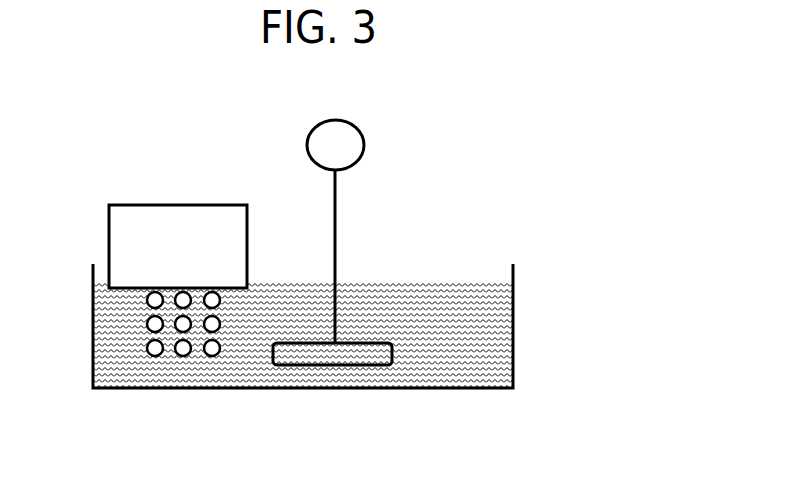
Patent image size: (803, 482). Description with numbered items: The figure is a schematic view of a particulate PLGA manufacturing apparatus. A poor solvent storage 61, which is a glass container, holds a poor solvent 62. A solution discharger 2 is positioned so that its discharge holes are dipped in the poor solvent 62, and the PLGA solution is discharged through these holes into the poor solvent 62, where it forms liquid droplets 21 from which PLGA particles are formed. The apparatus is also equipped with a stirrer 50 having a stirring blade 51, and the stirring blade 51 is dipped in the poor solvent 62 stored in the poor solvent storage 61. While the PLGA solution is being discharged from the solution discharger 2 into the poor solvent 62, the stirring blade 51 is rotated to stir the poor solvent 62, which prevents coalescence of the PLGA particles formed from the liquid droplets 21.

The solution discharger 2 is at (180, 218).
The liquid droplets 21 is at (150, 331).
The stirrer 50 is at (365, 147).
The stirring blade 51 is at (362, 357).
The poor solvent storage 61 is at (516, 315).
The poor solvent 62 is at (445, 363).